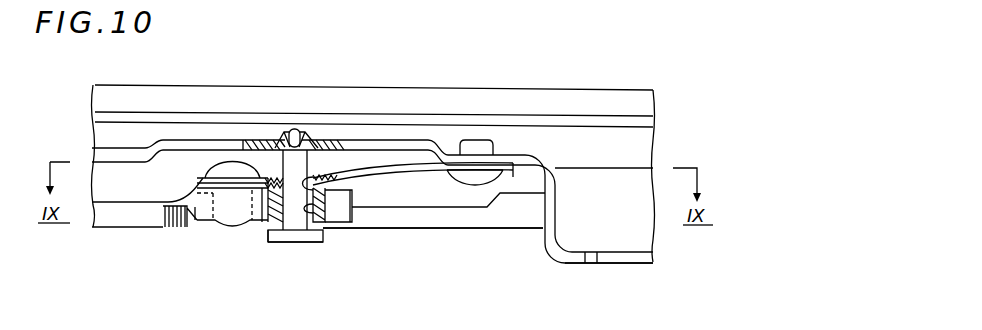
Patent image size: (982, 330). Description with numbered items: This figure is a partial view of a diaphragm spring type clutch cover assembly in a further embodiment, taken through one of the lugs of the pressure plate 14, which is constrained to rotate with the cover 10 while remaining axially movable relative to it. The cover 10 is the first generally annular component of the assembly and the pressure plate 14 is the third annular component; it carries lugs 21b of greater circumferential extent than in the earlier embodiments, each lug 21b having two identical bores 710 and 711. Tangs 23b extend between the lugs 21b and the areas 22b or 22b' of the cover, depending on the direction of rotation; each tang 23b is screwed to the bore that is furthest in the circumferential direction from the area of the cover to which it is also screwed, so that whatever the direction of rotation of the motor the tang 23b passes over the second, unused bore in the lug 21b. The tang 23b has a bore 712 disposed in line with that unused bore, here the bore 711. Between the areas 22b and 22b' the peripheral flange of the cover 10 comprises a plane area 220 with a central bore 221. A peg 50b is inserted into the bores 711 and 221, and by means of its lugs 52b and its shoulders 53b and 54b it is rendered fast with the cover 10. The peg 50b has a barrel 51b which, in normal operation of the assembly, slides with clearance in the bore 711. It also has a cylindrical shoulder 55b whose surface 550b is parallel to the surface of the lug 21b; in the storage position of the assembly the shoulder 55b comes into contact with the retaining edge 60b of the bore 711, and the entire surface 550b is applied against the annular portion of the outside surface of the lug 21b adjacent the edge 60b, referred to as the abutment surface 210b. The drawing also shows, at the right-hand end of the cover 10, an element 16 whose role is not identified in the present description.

The cover 10 is at (585, 84).
The pressure plate 14 is at (459, 240).
The flange end 16 is at (660, 258).
The lug 21b is at (207, 212).
The area of the cover 22b is at (480, 179).
The area of the cover 22b' is at (167, 127).
The tang 23b is at (410, 169).
The peg 50b is at (304, 280).
The barrel 51b is at (298, 226).
The lugs 52b is at (294, 128).
The shoulder 53b is at (273, 138).
The shoulder 54b is at (312, 150).
The cylindrical shoulder 55b is at (308, 250).
The edge of the bore 60b is at (279, 243).
The abutment surface 210b is at (264, 226).
The plane area 220 is at (375, 135).
The central bore 221 is at (285, 161).
The surface of the shoulder 550b is at (327, 229).
The bore 710 is at (198, 196).
The bore 711 is at (313, 209).
The bore 712 is at (313, 193).